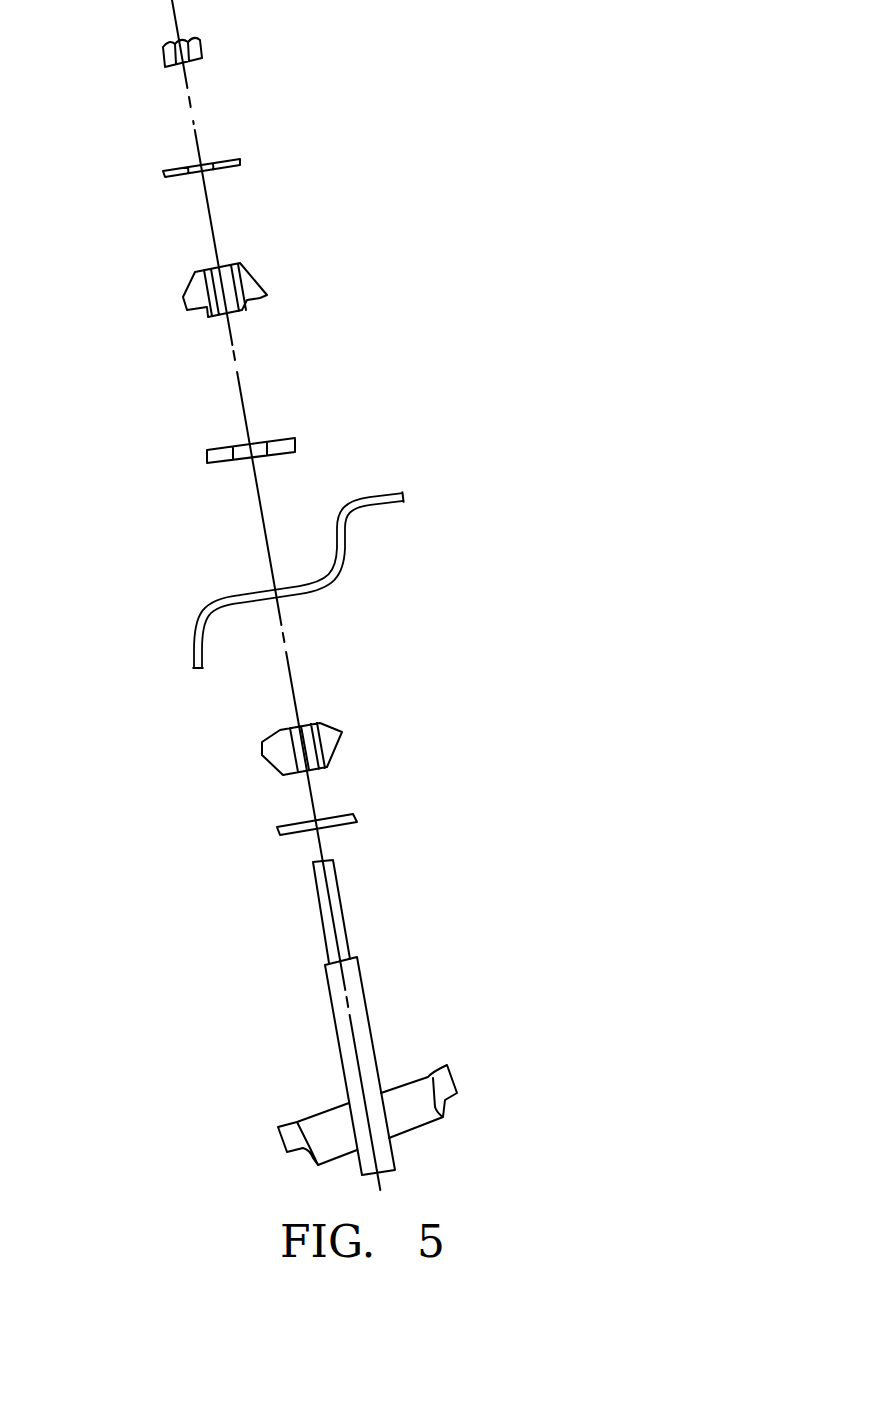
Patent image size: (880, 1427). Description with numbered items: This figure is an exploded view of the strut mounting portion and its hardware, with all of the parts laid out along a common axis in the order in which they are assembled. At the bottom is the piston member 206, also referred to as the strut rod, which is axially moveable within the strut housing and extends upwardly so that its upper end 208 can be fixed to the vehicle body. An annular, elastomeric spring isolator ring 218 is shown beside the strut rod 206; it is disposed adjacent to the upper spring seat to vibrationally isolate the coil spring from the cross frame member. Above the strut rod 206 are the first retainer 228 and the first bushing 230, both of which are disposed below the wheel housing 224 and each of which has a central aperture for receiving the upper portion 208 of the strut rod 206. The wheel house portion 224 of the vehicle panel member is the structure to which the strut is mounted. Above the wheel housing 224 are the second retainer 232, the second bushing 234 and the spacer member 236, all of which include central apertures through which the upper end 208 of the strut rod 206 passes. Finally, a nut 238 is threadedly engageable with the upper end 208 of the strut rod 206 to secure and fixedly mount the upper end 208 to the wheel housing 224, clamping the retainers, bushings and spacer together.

The piston member 206 is at (367, 1013).
The upper end 208 is at (327, 857).
The spring isolator ring 218 is at (460, 1077).
The wheel house portion 224 is at (392, 508).
The first retainer 228 is at (355, 815).
The first bushing 230 is at (387, 725).
The second retainer 232 is at (180, 167).
The second bushing 234 is at (195, 272).
The spacer member 236 is at (205, 458).
The nut 238 is at (172, 45).